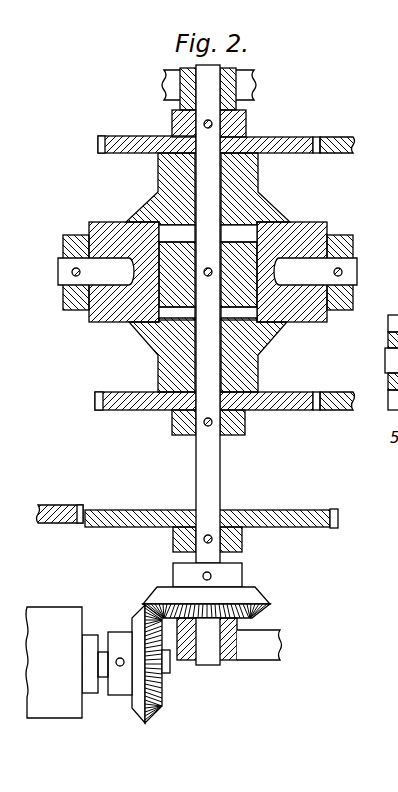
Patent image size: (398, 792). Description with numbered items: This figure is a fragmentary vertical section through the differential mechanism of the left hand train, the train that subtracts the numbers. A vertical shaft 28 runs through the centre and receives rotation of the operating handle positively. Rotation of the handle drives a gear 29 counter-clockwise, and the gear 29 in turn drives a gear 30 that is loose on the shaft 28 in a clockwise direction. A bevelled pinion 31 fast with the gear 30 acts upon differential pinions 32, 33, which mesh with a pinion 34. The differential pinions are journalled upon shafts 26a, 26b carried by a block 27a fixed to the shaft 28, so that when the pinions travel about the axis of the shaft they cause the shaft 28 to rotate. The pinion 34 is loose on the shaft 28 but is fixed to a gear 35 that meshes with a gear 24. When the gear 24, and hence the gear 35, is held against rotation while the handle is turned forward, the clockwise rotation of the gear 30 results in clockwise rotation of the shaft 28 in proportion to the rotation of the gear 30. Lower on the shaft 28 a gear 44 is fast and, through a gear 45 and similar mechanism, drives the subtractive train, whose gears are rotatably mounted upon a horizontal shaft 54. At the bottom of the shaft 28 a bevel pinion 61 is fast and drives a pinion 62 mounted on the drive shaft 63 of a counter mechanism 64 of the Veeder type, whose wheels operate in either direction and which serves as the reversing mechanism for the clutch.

The gear 24 is at (338, 134).
The shaft 26a is at (58, 268).
The shaft 26b is at (353, 273).
The block 27a is at (202, 241).
The shaft 28 is at (214, 482).
The gear 29 is at (343, 410).
The gear 30 is at (132, 411).
The bevelled pinion 31 is at (260, 372).
The differential pinion 32 is at (113, 328).
The differential pinion 33 is at (308, 221).
The pinion 34 is at (157, 172).
The gear 35 is at (128, 136).
The gear 44 is at (145, 528).
The gear 45 is at (60, 505).
The horizontal shaft 54 is at (387, 366).
The bevel pinion 61 is at (258, 596).
The pinion 62 is at (138, 714).
The drive shaft 63 is at (168, 668).
The counter mechanism 64 is at (63, 724).